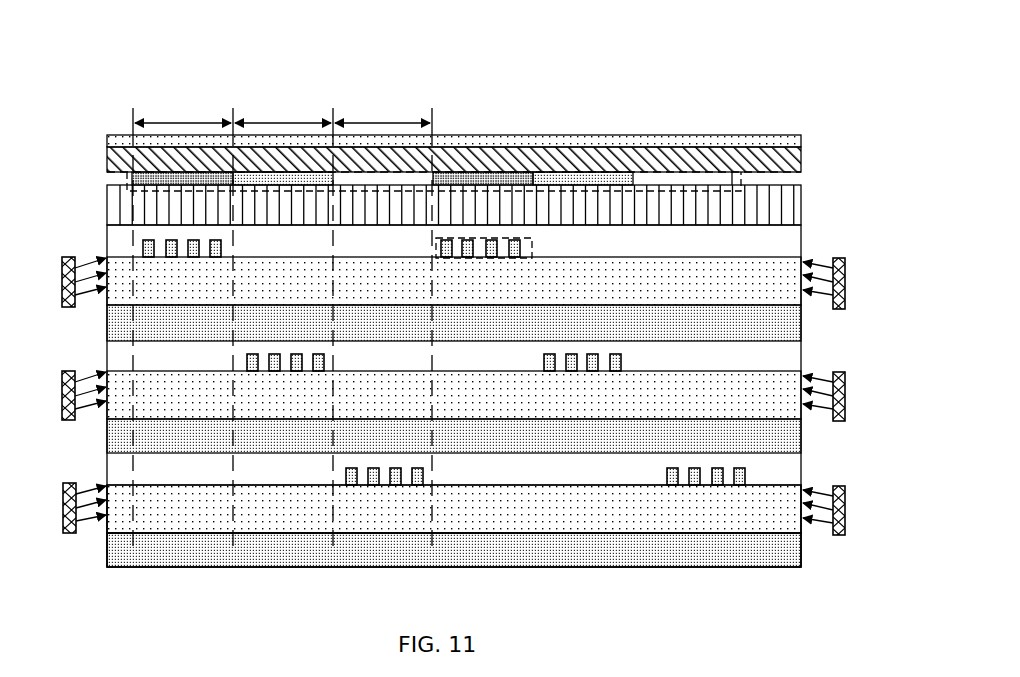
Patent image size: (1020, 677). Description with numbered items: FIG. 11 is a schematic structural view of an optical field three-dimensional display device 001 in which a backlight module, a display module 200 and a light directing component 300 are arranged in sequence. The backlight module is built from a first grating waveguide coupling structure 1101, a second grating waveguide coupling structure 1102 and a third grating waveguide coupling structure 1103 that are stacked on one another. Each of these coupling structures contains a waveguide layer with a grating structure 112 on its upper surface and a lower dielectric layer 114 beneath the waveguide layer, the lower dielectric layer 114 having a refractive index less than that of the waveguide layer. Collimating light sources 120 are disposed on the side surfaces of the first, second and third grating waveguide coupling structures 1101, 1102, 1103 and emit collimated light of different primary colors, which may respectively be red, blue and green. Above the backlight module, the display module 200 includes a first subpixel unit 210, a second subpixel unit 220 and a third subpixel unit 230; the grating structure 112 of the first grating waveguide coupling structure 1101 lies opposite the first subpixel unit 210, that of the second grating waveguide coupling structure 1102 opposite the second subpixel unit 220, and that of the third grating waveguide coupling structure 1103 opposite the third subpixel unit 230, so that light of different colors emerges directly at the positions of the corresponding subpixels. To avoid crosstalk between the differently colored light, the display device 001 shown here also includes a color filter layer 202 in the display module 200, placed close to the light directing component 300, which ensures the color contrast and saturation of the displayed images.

The display device 001 is at (53, 54).
The light directing component 300 is at (802, 138).
The display module 200 is at (480, 166).
The color filter layer 202 is at (620, 172).
The first subpixel unit 210 is at (182, 324).
The second subpixel unit 220 is at (282, 324).
The third subpixel unit 230 is at (382, 324).
The first grating waveguide coupling structure 1101 is at (107, 341).
The second grating waveguide coupling structure 1102 is at (107, 453).
The third grating waveguide coupling structure 1103 is at (107, 567).
The collimating light source 120 is at (845, 278).
The grating structure 112 is at (677, 513).
The lower dielectric layer 114 is at (407, 545).